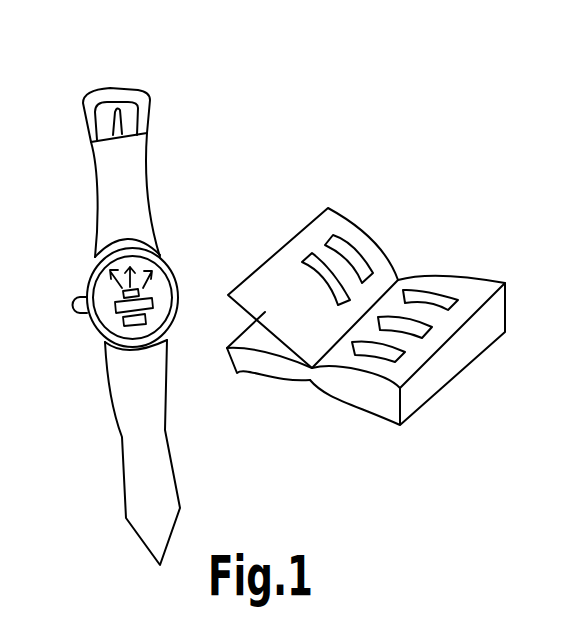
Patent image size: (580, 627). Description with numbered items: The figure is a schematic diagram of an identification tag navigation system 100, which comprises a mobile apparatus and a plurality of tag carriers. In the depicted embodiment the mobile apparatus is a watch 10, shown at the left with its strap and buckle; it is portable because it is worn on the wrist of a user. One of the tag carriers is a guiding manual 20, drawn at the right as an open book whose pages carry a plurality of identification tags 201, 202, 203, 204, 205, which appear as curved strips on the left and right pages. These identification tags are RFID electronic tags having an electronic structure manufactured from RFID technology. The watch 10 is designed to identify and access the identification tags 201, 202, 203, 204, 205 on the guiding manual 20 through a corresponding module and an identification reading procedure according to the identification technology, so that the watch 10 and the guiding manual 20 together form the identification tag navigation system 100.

The watch 10 is at (97, 85).
The identification tag navigation system 100 is at (350, 115).
The guiding manual 20 is at (468, 237).
The identification tag 201 is at (336, 244).
The identification tag 202 is at (308, 262).
The identification tag 203 is at (440, 296).
The identification tag 204 is at (420, 330).
The identification tag 205 is at (397, 354).